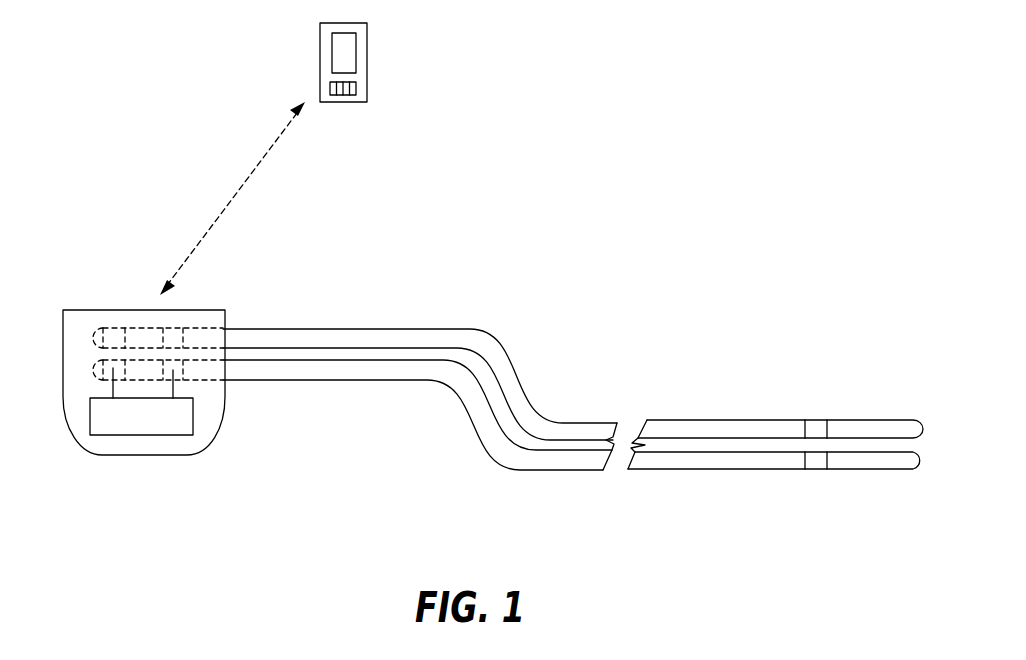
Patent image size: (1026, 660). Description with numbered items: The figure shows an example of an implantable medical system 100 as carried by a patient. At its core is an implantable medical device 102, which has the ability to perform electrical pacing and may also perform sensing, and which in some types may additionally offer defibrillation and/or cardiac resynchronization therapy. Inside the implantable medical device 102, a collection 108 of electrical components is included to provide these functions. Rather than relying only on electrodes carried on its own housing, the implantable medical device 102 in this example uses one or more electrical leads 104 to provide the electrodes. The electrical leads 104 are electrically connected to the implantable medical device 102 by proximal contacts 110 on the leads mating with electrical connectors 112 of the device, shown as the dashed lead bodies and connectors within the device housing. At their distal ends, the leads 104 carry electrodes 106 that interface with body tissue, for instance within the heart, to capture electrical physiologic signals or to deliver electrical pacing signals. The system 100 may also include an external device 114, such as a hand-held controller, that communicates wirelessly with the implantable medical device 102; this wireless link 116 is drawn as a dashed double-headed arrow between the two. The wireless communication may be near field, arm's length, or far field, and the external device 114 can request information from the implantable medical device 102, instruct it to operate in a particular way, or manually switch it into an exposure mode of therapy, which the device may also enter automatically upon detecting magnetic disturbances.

The implantable medical system 100 is at (376, 266).
The implantable medical device 102 is at (203, 427).
The electrical lead 104 is at (500, 340).
The electrodes 106 is at (917, 420).
The collection of electrical components 108 is at (193, 413).
The proximal contacts 110 is at (103, 363).
The electrical connectors 112 is at (108, 372).
The external device 114 is at (367, 60).
The wireless communication link 116 is at (230, 205).